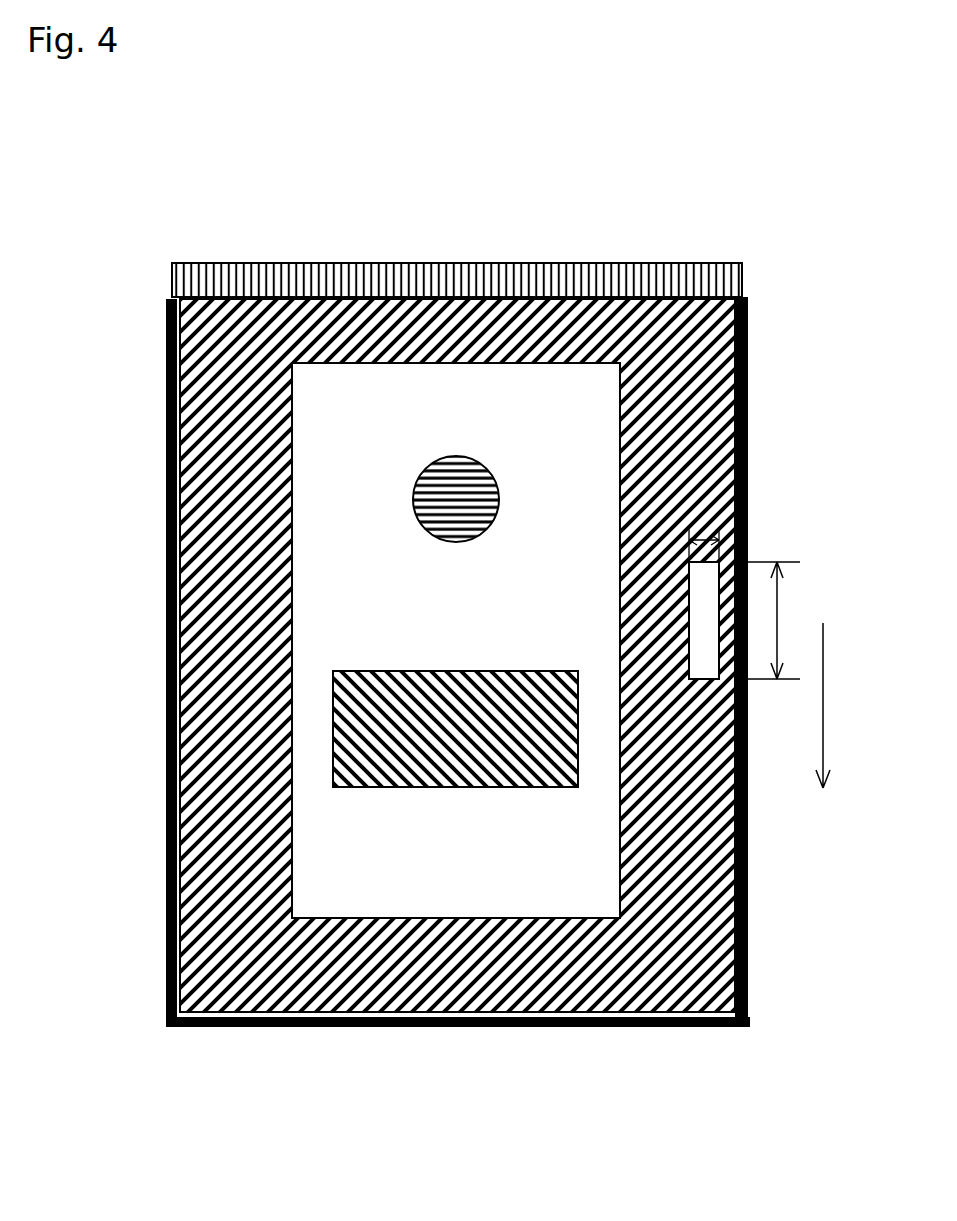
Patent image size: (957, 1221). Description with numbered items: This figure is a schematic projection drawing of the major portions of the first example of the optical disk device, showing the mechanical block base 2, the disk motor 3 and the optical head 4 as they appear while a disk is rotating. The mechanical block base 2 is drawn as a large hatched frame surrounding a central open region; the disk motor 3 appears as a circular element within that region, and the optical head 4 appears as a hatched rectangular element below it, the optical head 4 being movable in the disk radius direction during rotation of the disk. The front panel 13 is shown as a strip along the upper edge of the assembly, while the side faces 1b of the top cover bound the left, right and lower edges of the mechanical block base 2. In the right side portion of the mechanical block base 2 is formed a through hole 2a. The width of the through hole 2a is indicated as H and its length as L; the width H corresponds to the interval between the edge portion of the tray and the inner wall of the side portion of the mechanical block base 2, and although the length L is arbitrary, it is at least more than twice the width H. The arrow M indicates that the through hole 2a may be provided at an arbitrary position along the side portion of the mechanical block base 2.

The side faces 1b is at (167, 878).
The mechanical block base 2 is at (190, 437).
The through hole 2a is at (705, 680).
The disk motor 3 is at (413, 500).
The optical head 4 is at (333, 742).
The front panel 13 is at (430, 265).
The width of the through hole H is at (700, 540).
The length of the through hole L is at (767, 620).
The arrow M is at (835, 705).